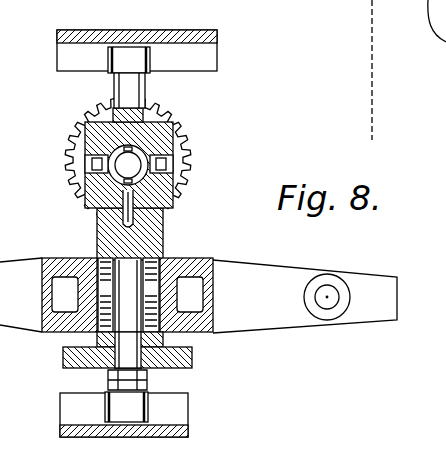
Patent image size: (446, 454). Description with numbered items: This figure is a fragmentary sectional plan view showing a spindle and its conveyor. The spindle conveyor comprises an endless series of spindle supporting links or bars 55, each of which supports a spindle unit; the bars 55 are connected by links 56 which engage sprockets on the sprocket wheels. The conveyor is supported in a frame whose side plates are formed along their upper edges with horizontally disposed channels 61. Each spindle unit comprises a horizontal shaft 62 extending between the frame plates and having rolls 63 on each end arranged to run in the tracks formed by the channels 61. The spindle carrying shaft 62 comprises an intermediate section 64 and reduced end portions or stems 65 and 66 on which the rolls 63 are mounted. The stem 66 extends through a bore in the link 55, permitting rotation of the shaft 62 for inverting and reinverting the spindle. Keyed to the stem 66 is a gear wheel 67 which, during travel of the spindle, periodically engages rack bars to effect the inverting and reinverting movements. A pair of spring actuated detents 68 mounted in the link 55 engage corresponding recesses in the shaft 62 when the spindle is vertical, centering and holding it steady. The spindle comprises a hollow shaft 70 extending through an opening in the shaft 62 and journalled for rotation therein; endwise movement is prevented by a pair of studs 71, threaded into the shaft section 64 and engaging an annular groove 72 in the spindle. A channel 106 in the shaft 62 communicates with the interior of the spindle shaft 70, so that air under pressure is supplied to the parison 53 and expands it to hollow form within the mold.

The parison 53 is at (409, 70).
The spindle supporting link 55 is at (257, 247).
The link 56 is at (370, 280).
The channel 61 is at (208, 57).
The horizontal shaft 62 is at (150, 236).
The roll 63 is at (122, 66).
The intermediate section 64 is at (170, 130).
The stem 65 is at (140, 88).
The stem 66 is at (120, 357).
The gear wheel 67 is at (192, 362).
The spring actuated detent 68 is at (94, 270).
The hollow shaft 70 is at (170, 146).
The stud 71 is at (170, 162).
The annular groove 72 is at (100, 153).
The channel 106 is at (125, 222).